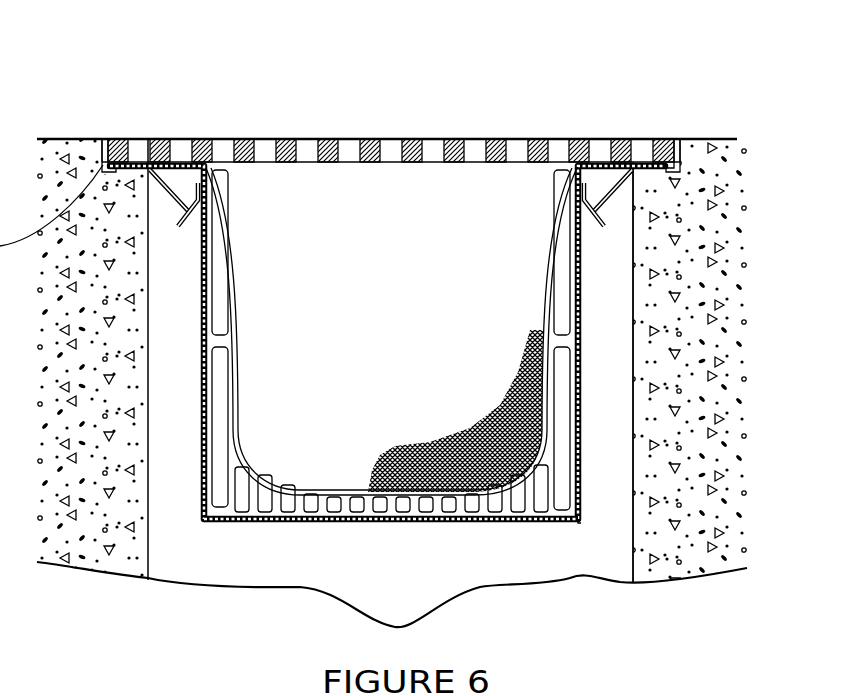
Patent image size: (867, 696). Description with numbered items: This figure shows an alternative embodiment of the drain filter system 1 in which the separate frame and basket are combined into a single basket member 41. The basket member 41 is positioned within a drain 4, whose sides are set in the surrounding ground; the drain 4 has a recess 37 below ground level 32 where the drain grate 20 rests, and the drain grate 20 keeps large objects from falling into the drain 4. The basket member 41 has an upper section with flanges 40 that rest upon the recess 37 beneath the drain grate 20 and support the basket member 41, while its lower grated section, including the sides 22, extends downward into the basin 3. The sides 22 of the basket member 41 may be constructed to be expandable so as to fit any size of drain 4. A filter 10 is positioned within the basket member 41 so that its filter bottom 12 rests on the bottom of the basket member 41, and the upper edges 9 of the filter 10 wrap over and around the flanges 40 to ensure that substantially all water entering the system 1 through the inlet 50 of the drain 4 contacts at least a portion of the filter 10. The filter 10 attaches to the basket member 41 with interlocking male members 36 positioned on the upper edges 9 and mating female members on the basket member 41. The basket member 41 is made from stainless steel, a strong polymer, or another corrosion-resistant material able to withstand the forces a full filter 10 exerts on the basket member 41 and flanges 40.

The drain filter system 1 is at (231, 547).
The basin 3 is at (601, 552).
The drain 4 is at (420, 113).
The upper edges 9 is at (175, 182).
The filter 10 is at (421, 247).
The filter bottom 12 is at (308, 522).
The drain grate 20 is at (662, 160).
The sides 22 is at (581, 367).
The ground level 32 is at (720, 152).
The male members 36 is at (178, 226).
The recess 37 is at (673, 175).
The flanges 40 is at (105, 139).
The basket member 41 is at (430, 522).
The inlet 50 is at (103, 137).